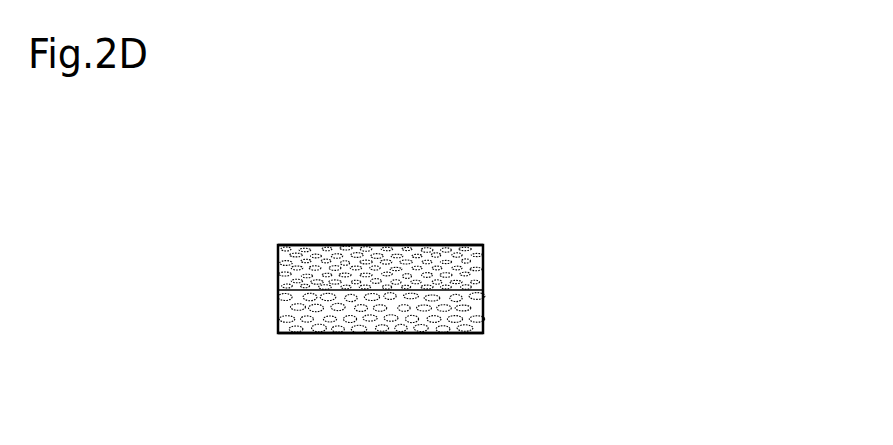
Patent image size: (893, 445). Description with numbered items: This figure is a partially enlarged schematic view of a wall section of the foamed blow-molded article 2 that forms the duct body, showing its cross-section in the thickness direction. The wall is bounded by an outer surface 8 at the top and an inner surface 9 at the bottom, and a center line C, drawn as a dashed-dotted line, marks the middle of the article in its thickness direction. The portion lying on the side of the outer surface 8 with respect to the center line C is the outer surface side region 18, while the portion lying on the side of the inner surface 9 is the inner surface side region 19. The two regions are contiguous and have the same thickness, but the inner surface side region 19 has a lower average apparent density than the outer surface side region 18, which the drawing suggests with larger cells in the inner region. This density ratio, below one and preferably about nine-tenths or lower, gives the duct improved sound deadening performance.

The foamed blow-molded article 2 is at (348, 245).
The outer surface 8 is at (416, 245).
The inner surface 9 is at (385, 334).
The outer surface side region 18 is at (492, 245).
The inner surface side region 19 is at (492, 290).
The center line C is at (297, 289).